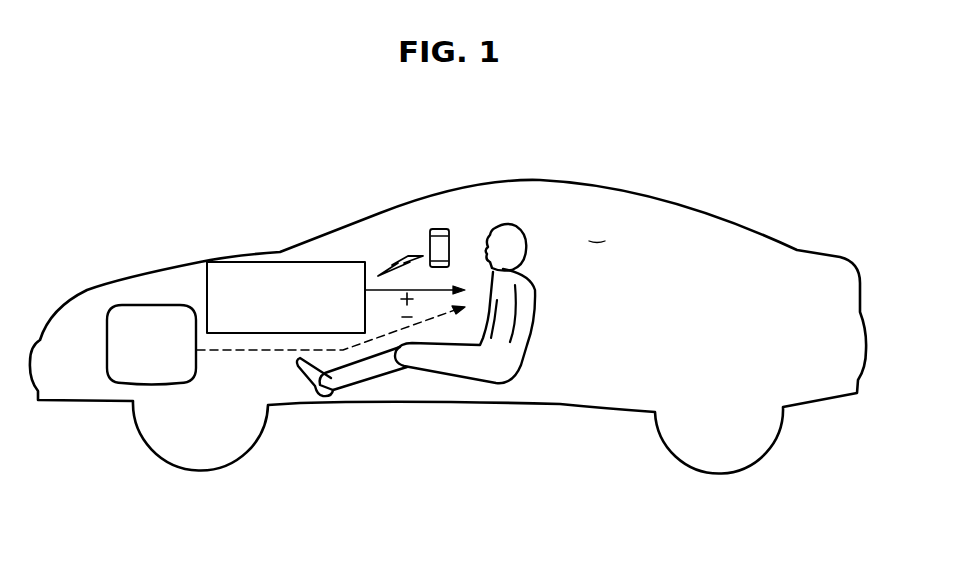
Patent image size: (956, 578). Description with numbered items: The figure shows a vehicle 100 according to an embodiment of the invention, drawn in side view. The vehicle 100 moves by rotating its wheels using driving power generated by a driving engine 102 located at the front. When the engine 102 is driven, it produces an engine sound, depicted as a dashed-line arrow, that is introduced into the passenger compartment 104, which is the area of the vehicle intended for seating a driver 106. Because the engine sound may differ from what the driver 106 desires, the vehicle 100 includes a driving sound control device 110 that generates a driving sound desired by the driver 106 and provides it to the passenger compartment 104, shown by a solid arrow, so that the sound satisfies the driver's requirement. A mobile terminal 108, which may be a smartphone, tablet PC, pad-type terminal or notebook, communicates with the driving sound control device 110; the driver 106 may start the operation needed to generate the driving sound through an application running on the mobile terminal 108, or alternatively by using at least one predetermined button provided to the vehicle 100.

The vehicle 100 is at (735, 216).
The engine 102 is at (143, 303).
The passenger compartment 104 is at (594, 240).
The driver 106 is at (512, 233).
The mobile terminal 108 is at (430, 228).
The driving sound control device 110 is at (279, 253).